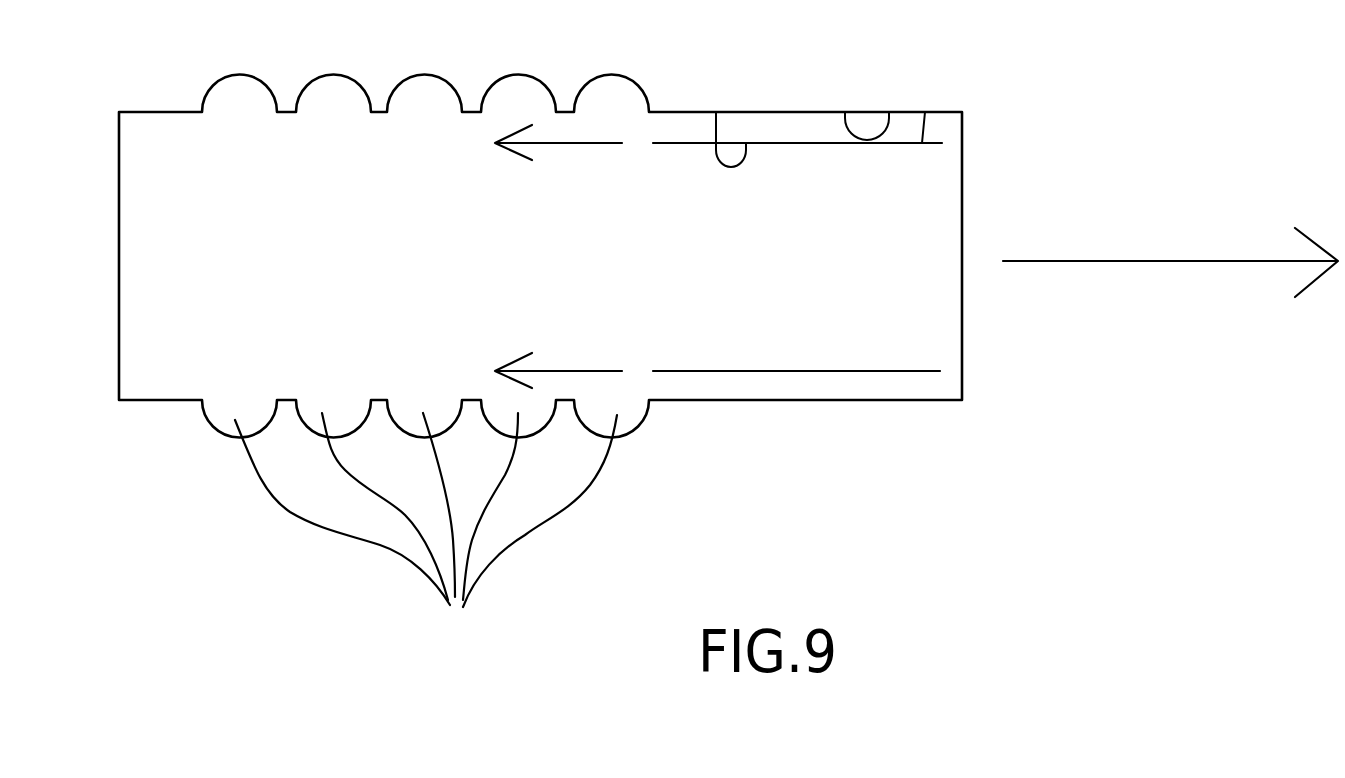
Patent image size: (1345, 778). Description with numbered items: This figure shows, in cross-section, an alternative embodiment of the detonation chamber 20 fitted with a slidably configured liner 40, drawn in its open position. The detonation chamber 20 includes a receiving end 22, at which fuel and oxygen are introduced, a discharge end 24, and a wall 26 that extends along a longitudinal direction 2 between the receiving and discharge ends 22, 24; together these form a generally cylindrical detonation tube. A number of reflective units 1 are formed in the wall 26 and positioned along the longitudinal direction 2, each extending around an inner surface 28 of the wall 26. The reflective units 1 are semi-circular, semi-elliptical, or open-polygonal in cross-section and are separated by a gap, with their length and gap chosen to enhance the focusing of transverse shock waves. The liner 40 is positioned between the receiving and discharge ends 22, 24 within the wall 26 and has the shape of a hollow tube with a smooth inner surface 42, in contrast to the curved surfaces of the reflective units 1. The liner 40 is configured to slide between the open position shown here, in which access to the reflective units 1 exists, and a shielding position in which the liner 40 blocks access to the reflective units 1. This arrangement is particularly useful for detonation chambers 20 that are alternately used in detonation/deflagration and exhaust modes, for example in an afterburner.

The reflective units 1 is at (426, 528).
The longitudinal direction 2 is at (1170, 265).
The detonation chamber 20 is at (1320, 97).
The receiving end 22 is at (119, 358).
The discharge end 24 is at (962, 363).
The wall 26 is at (795, 401).
The inner surface 28 is at (845, 112).
The liner 40 is at (925, 112).
The smooth inner surface 42 is at (716, 112).